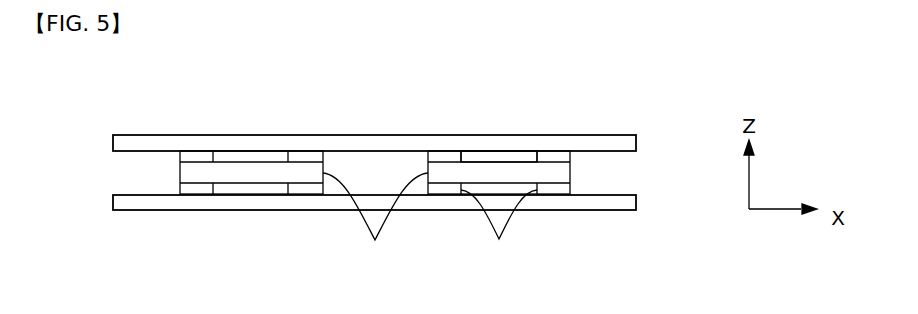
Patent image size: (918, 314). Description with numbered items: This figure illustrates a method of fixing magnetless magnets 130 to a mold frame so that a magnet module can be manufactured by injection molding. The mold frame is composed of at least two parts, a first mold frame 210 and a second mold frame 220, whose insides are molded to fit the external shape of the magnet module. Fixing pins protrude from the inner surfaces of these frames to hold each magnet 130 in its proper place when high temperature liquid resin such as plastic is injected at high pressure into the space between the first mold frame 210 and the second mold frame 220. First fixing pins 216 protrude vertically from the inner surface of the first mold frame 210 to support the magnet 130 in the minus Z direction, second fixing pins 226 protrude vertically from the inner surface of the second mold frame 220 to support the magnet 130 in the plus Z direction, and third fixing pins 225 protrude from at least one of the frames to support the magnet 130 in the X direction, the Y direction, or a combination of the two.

The first mold frame 210 is at (146, 143).
The second mold frame 220 is at (145, 203).
The magnetless magnet 130 is at (248, 168).
The first fixing pin 216 is at (462, 153).
The third fixing pin 225 is at (375, 230).
The second fixing pin 226 is at (499, 239).